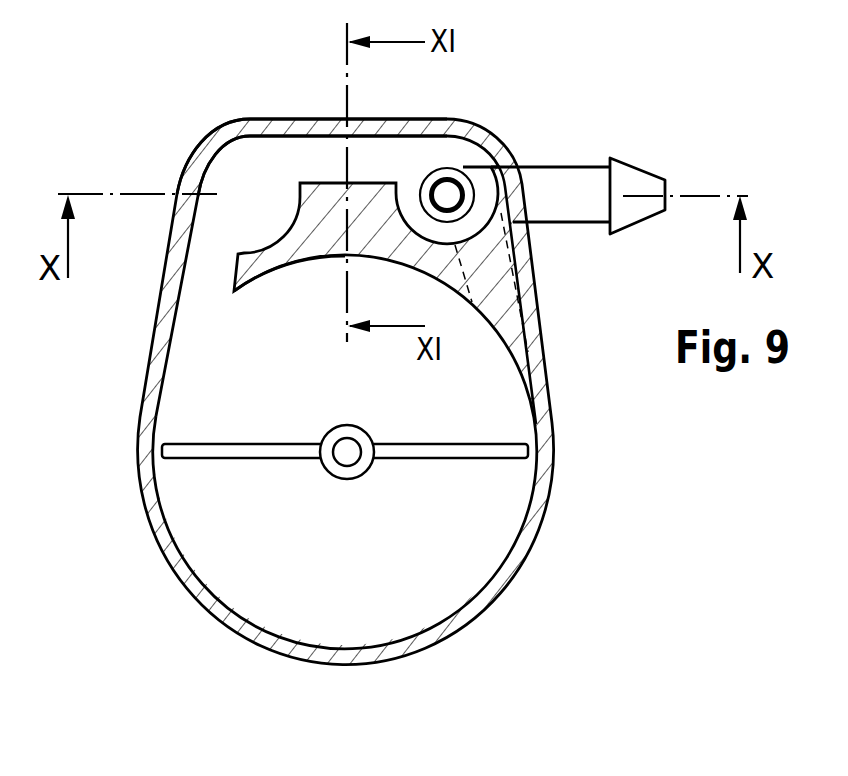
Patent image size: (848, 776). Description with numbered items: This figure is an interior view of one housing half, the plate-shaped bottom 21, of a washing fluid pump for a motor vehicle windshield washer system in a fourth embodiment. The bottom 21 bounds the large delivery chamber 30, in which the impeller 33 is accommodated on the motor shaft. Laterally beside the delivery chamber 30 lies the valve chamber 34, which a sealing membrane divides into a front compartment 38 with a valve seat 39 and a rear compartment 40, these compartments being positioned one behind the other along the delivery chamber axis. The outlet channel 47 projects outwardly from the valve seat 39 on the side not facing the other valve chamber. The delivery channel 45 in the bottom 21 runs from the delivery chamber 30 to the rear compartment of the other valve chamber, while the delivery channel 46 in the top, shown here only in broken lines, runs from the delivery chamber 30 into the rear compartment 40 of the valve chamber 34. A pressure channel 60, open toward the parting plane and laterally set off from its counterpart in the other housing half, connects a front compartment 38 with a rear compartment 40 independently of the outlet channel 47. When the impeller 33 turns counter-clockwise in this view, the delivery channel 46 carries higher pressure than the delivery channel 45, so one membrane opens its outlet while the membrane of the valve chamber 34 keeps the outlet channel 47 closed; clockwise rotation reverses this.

The bottom 21 is at (537, 394).
The delivery chamber 30 is at (490, 552).
The impeller 33 is at (487, 447).
The valve chamber 34 is at (232, 153).
The front compartment 38 is at (462, 156).
The valve seat 39 is at (468, 172).
The rear compartment 40 is at (217, 181).
The delivery channel 45 is at (208, 273).
The delivery channel 46 is at (482, 289).
The outlet channel 47 is at (580, 183).
The pressure channel 60 is at (372, 153).